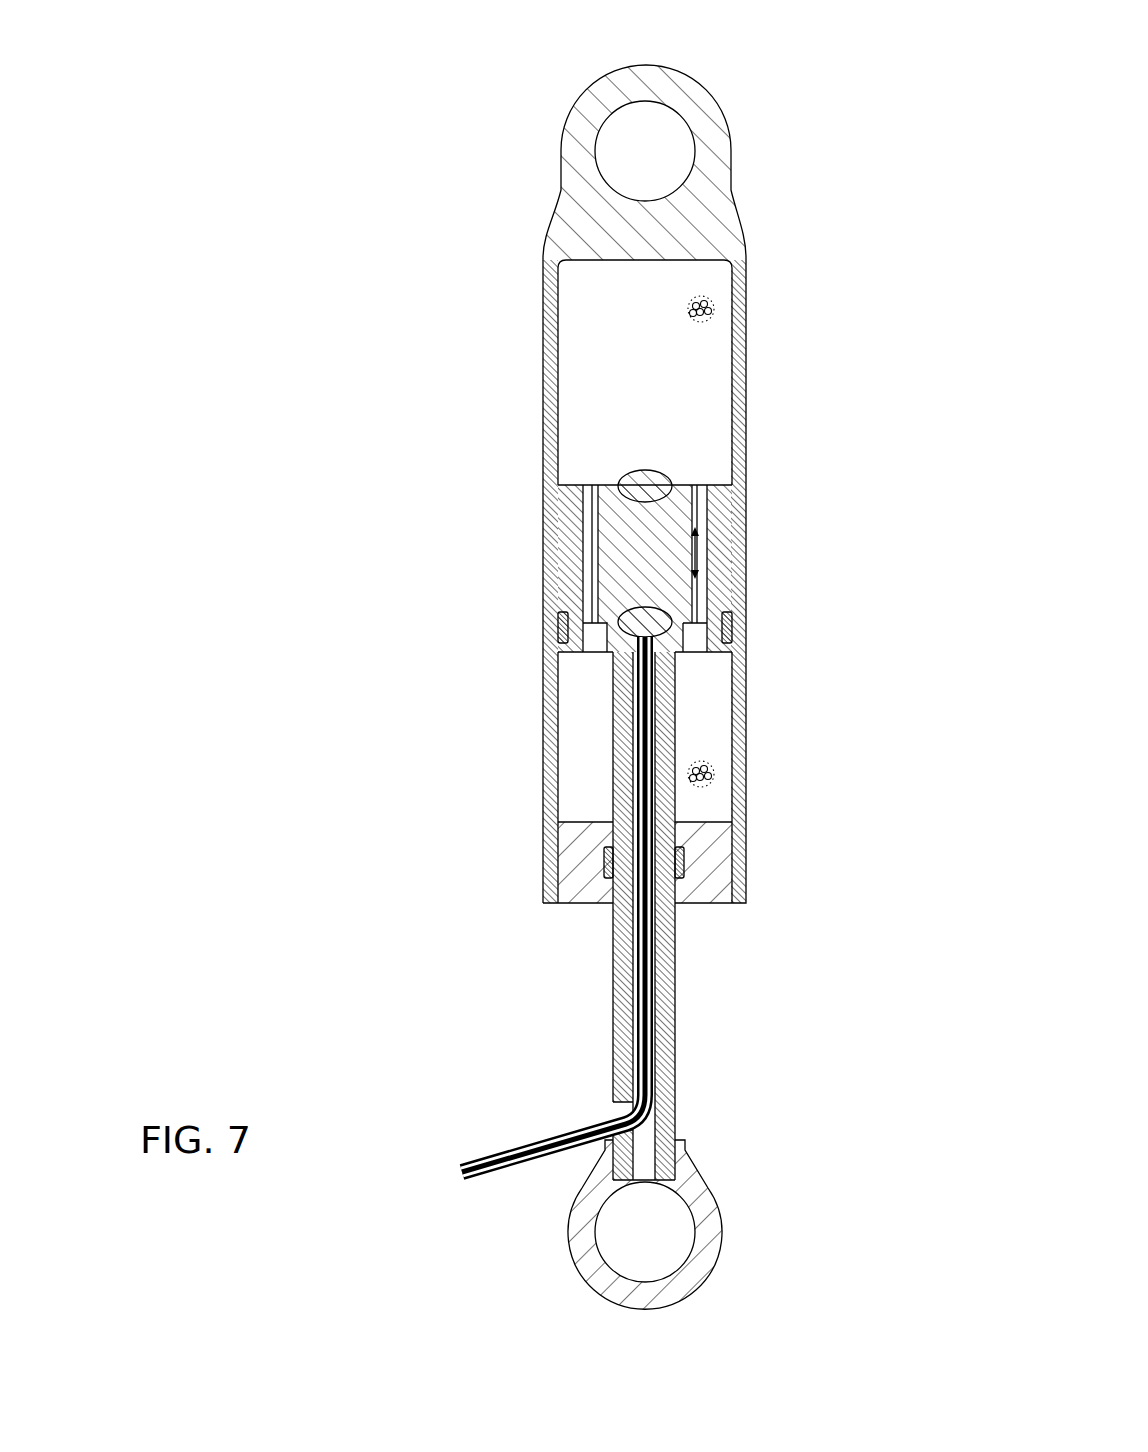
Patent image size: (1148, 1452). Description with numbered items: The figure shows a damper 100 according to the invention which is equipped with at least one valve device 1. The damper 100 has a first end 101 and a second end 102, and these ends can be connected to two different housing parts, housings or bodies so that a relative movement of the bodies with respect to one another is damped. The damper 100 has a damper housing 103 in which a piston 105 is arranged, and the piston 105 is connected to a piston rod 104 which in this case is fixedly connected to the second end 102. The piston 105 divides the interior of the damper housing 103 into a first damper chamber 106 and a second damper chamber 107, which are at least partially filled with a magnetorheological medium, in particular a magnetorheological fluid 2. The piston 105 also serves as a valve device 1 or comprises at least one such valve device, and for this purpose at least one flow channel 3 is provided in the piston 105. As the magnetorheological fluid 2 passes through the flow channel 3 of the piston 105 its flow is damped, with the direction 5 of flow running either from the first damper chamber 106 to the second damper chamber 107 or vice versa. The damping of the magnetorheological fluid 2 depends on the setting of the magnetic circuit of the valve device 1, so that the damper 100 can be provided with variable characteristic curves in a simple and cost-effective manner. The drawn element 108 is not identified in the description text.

The damper 100 is at (316, 73).
The valve device 1 is at (755, 525).
The magnetorheological fluid 2 is at (714, 306).
The flow channel 3 is at (597, 485).
The direction of flow 5 is at (690, 557).
The first end 101 is at (722, 127).
The second end 102 is at (709, 1224).
The damper housing 103 is at (576, 581).
The piston rod 104 is at (540, 916).
The piston 105 is at (569, 568).
The first damper chamber 106 is at (569, 372).
The second damper chamber 107 is at (569, 777).
The wire 108 is at (525, 904).